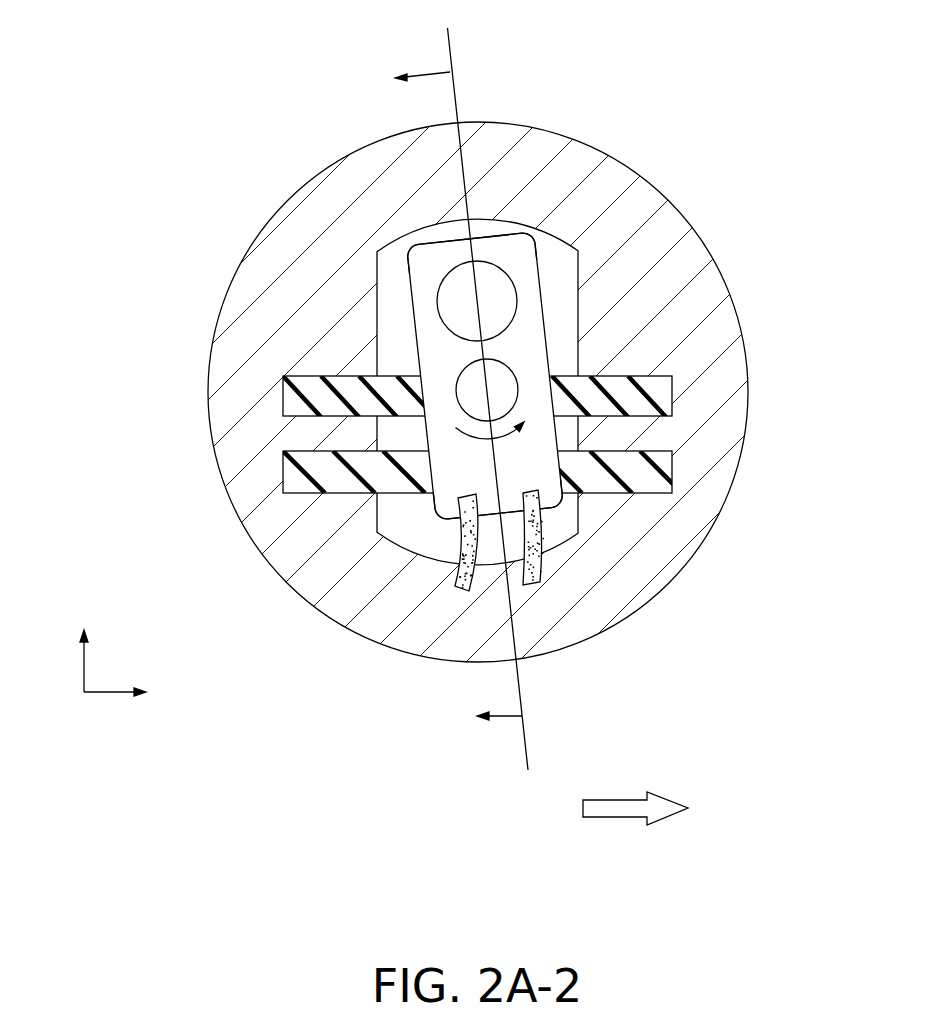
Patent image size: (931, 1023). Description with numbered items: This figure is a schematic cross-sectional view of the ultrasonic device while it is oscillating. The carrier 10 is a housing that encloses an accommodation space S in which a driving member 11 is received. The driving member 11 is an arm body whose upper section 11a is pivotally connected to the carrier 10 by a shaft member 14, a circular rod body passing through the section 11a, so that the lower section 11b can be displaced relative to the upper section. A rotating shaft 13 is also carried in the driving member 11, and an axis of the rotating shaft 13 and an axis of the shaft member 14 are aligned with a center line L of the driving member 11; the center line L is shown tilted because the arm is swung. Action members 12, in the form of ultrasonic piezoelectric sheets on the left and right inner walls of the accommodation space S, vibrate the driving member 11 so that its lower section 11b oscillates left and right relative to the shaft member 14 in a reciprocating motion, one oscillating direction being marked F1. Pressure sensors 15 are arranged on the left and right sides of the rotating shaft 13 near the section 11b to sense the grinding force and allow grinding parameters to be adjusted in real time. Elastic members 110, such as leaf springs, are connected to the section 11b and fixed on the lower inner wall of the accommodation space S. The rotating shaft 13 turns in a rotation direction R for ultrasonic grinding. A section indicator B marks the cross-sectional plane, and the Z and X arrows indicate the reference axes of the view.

The carrier 10 is at (577, 160).
The driving member 11 is at (513, 258).
The section on one side of the driving member 11a is at (420, 258).
The section on the other side of the driving member 11b is at (450, 512).
The action member 12 is at (295, 396).
The rotating shaft 13 is at (500, 375).
The shaft member 14 is at (507, 298).
The pressure sensor 15 is at (295, 473).
The elastic member 110 is at (460, 590).
The accommodation space S is at (390, 297).
The rotation direction R is at (548, 506).
The center line of the driving member L is at (487, 400).
The section line B- B is at (450, 400).
The oscillating direction F1 is at (613, 800).
The Z axis Z is at (84, 647).
The X axis X is at (125, 697).